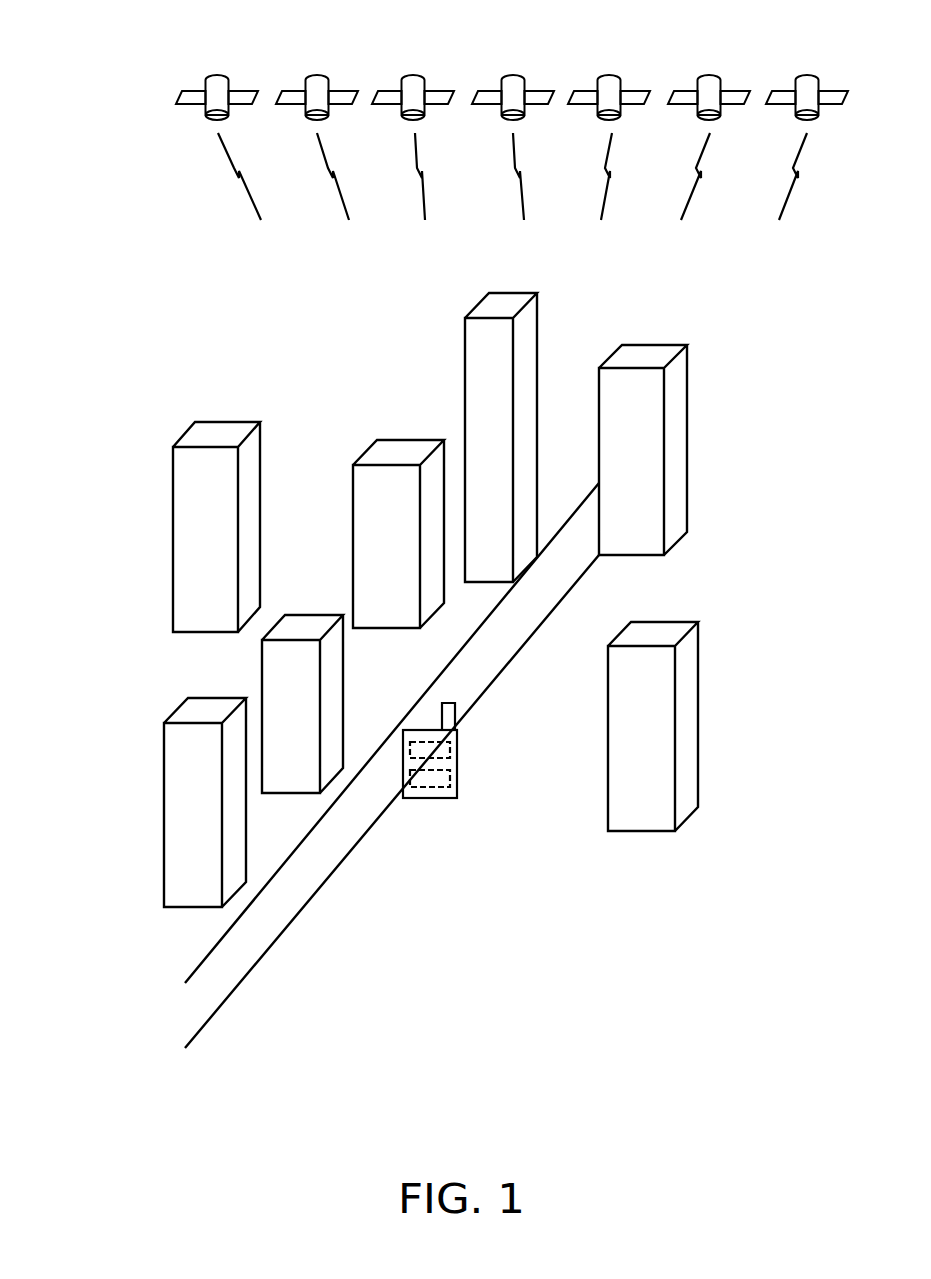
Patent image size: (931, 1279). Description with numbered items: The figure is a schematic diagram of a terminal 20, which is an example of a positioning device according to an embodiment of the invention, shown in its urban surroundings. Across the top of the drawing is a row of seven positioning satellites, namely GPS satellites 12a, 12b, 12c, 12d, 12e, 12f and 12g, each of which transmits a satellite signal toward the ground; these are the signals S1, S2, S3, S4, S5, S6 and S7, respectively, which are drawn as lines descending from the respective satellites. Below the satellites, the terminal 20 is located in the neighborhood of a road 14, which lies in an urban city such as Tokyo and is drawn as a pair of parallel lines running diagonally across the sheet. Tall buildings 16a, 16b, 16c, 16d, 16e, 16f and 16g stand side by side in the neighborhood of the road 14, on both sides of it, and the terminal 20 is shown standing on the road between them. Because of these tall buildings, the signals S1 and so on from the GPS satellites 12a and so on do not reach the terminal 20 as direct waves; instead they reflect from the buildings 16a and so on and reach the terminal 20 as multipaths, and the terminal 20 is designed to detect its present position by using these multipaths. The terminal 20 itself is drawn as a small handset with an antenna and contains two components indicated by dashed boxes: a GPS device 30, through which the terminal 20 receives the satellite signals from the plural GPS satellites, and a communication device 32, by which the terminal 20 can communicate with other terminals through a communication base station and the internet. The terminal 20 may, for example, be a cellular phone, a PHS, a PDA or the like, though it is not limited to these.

The GPS satellite 12a is at (218, 75).
The GPS satellite 12b is at (318, 75).
The GPS satellite 12c is at (414, 75).
The GPS satellite 12d is at (514, 75).
The GPS satellite 12e is at (610, 75).
The GPS satellite 12f is at (710, 75).
The GPS satellite 12g is at (808, 75).
The signal S1 is at (229, 160).
The signal S2 is at (325, 160).
The signal S3 is at (416, 160).
The signal S4 is at (514, 160).
The signal S5 is at (606, 160).
The signal S6 is at (699, 160).
The signal S7 is at (796, 160).
The building 16a is at (404, 440).
The building 16b is at (668, 622).
The building 16c is at (307, 615).
The building 16d is at (222, 422).
The building 16e is at (510, 293).
The building 16f is at (212, 698).
The building 16g is at (651, 345).
The road 14 is at (252, 955).
The terminal 20 is at (428, 798).
The GPS device 30 is at (450, 752).
The communication device 32 is at (450, 780).